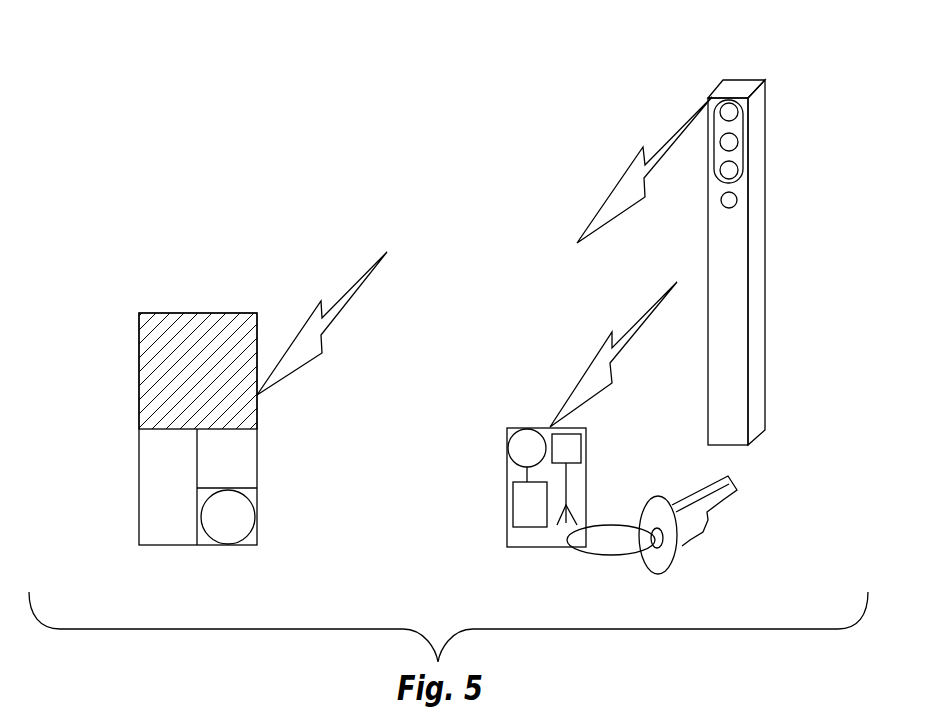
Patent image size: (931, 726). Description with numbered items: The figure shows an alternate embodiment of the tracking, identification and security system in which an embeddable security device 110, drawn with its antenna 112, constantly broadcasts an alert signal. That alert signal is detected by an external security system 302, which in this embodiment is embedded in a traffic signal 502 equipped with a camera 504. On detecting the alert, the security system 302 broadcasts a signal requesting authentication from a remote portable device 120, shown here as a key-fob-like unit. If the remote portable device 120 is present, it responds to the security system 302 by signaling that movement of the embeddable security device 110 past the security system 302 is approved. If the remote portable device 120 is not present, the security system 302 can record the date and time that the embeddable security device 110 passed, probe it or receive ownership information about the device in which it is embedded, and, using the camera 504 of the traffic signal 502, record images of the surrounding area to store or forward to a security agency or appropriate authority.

The embeddable security device 110 is at (112, 316).
The antenna 112 is at (201, 313).
The remote portable device 120 is at (497, 421).
The external security system 302 is at (745, 80).
The traffic signal 502 is at (742, 143).
The camera 504 is at (738, 200).